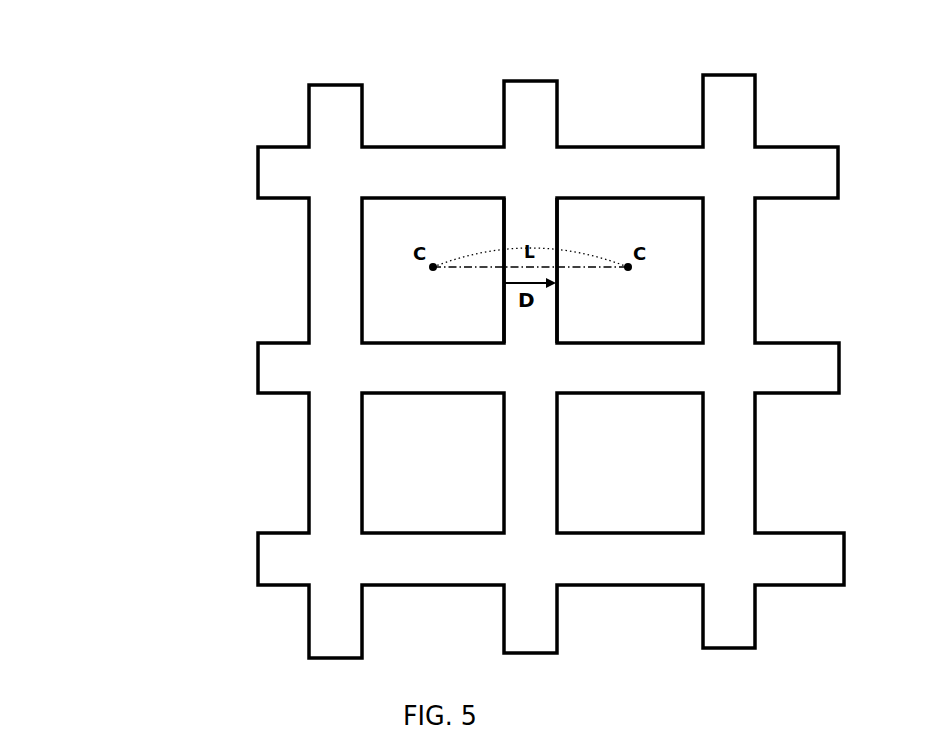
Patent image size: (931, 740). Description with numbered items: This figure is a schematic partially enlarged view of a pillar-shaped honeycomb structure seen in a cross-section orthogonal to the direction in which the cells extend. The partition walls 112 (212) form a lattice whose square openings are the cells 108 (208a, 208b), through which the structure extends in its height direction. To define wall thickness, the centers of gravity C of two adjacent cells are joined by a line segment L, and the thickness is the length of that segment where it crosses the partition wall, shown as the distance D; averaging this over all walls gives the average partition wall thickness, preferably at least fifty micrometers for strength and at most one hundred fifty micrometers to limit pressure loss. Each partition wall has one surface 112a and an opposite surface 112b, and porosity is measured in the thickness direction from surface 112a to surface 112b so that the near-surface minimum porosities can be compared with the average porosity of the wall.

The partition wall 112 is at (551, 336).
The partition wall 212 is at (456, 147).
The cell 108 is at (364, 365).
The cell 208a is at (532, 365).
The cell 208b is at (398, 447).
The one surface of the partition wall 112a is at (442, 270).
The other surface of the partition wall 112b is at (625, 270).